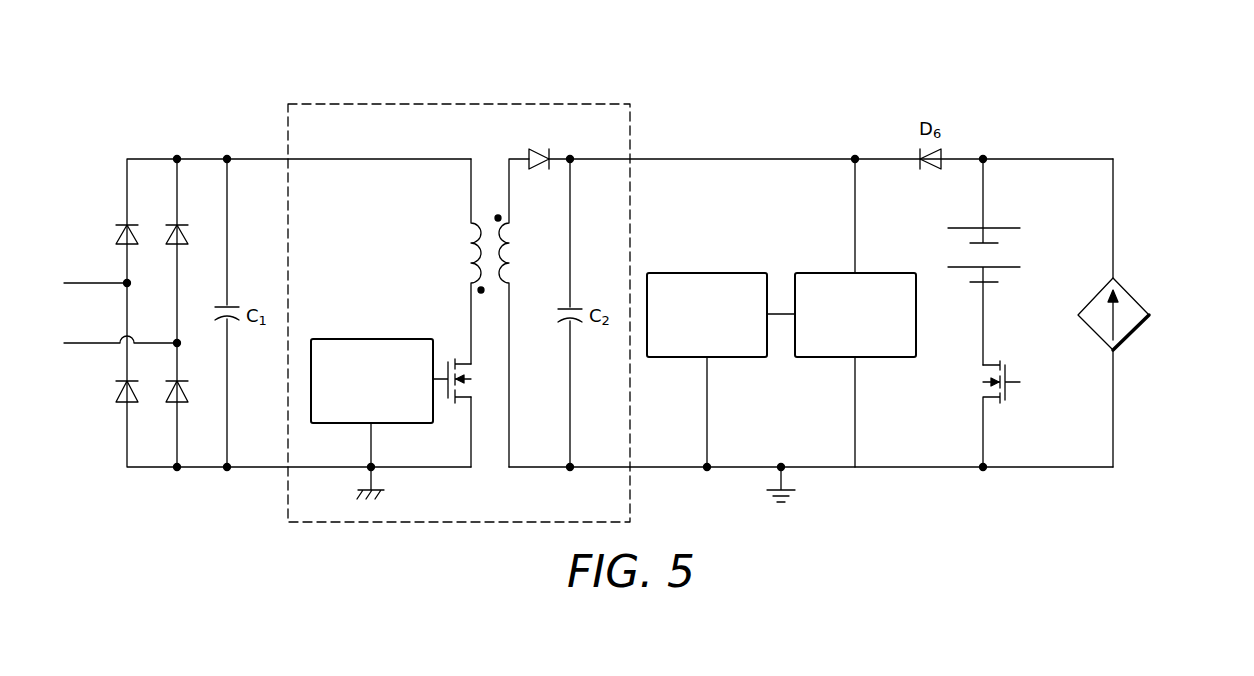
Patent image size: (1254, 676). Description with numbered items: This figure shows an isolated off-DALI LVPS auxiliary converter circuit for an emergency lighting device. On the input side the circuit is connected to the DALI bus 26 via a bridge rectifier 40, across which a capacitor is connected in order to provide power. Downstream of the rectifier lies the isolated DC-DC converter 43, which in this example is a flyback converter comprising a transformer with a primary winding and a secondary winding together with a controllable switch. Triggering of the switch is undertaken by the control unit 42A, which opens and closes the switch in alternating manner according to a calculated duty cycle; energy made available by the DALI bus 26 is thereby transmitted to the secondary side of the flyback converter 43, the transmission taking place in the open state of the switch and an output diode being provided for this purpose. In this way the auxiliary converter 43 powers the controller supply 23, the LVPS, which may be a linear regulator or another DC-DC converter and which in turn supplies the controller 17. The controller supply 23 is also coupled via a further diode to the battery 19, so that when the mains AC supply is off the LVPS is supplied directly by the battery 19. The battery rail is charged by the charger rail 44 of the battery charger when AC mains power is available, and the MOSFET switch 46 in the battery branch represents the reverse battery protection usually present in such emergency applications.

The bridge rectifier 40 is at (149, 169).
The DALI bus 26 is at (78, 345).
The isolated DC-DC converter (flyback converter) 43 is at (331, 89).
The control unit 42A is at (398, 339).
The controller 17 is at (746, 273).
The LVPS (controller supply) 23 is at (891, 273).
The battery 19 is at (1018, 229).
The MOSFET switch 46 is at (1006, 400).
The charger rail 44 is at (1131, 296).